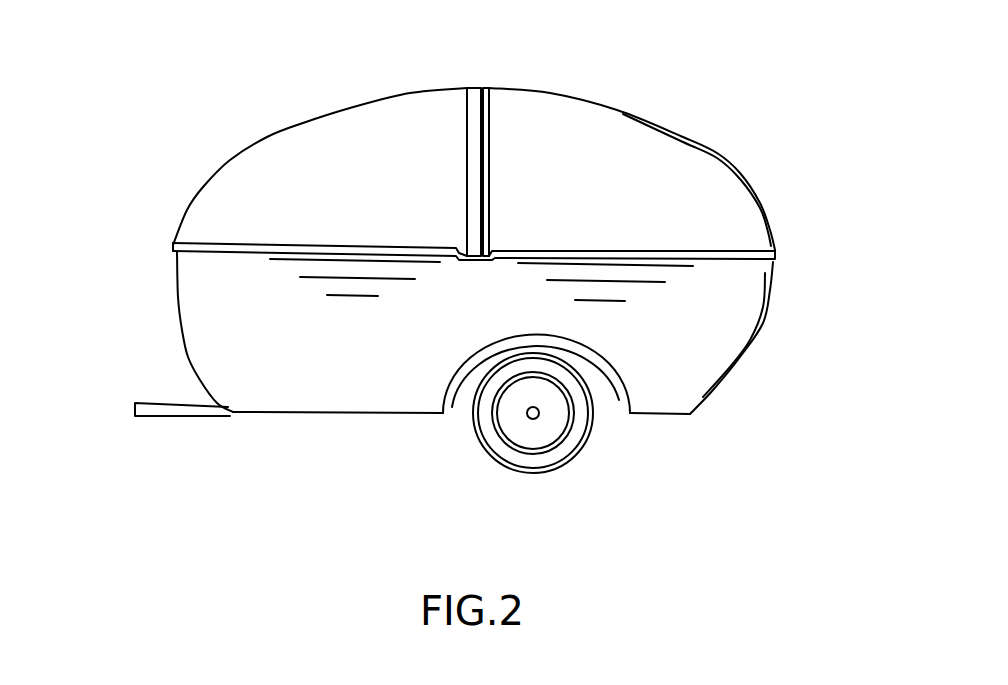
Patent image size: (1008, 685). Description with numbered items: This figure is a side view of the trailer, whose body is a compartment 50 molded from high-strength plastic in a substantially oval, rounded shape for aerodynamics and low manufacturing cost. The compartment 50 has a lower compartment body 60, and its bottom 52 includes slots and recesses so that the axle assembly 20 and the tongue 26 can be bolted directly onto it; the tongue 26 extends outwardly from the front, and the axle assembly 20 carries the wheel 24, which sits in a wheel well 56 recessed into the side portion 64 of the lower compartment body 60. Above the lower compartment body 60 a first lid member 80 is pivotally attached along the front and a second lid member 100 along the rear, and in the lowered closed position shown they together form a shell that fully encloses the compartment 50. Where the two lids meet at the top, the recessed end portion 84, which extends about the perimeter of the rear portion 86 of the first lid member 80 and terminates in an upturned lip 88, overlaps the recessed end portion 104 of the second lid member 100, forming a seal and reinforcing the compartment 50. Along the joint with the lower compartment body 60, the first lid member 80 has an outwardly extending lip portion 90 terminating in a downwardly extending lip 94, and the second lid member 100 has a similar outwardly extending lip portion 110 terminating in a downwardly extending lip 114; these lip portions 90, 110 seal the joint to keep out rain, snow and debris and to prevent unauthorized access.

The axle assembly 20 is at (477, 291).
The wheel 24 is at (495, 466).
The tongue 26 is at (189, 418).
The compartment 50 is at (446, 374).
The bottom 52 is at (367, 413).
The wheel well 56 is at (610, 405).
The lower compartment body 60 is at (745, 338).
The side portion 64 is at (631, 342).
The first lid member 80 is at (474, 133).
The recessed end portion 84 is at (470, 88).
The rear portion 86 is at (486, 172).
The upturned lip 88 is at (485, 88).
The outwardly extending lip portion 90 is at (143, 235).
The downwardly extending lip 94 is at (242, 252).
The second lid member 100 is at (677, 148).
The recessed end portion 104 is at (482, 163).
The outwardly extending lip portion 110 is at (810, 247).
The downwardly extending lip 114 is at (708, 262).